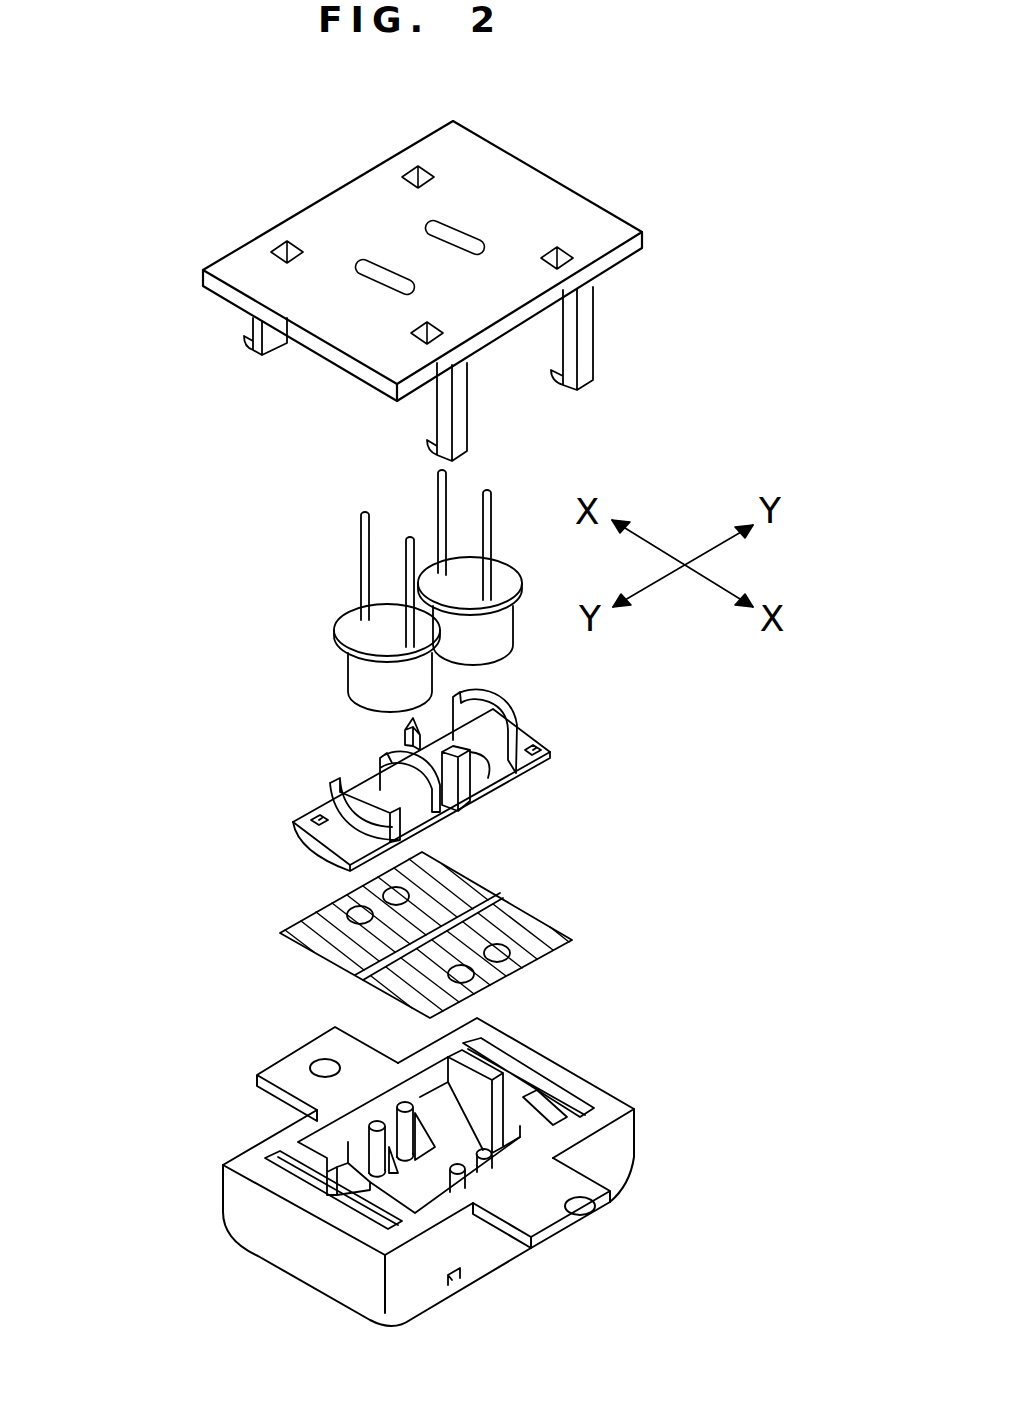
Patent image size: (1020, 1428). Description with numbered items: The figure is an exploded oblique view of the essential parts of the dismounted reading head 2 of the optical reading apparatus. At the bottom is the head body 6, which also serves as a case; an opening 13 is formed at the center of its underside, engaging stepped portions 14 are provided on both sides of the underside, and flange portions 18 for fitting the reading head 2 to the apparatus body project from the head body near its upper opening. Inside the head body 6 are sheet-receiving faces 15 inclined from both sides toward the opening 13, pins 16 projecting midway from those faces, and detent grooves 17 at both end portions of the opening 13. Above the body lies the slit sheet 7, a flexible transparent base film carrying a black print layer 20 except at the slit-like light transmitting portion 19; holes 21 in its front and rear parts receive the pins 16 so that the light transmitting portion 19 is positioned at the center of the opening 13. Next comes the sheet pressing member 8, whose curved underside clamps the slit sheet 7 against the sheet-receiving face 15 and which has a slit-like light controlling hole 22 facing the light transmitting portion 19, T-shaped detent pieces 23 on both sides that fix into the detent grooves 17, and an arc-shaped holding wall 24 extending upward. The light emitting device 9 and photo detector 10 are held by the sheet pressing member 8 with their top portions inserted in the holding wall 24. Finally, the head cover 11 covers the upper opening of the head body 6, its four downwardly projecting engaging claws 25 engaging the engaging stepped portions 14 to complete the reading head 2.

The reading head 2 is at (417, 291).
The head body 6 is at (441, 1184).
The slit sheet 7 is at (402, 930).
The sheet pressing member 8 is at (421, 759).
The light emitting device 9 is at (498, 633).
The photo detector 10 is at (352, 680).
The head cover 11 is at (548, 192).
The opening 13 is at (443, 1192).
The engaging stepped portion 14 is at (455, 1290).
The sheet-receiving face 15 is at (437, 1100).
The pin 16 is at (375, 1142).
The detent groove 17 is at (557, 1100).
The flange portion 18 is at (280, 1068).
The slit-like light transmitting portion 19 is at (493, 892).
The black print layer 20 is at (298, 945).
The hole 21 is at (353, 912).
The slit-like light controlling hole 22 is at (485, 790).
The detent piece 23 is at (310, 825).
The holding wall 24 is at (388, 768).
The engaging claw 25 is at (262, 350).